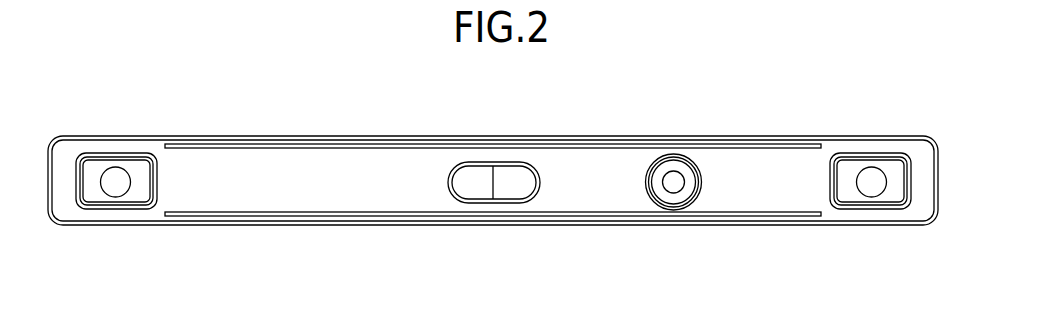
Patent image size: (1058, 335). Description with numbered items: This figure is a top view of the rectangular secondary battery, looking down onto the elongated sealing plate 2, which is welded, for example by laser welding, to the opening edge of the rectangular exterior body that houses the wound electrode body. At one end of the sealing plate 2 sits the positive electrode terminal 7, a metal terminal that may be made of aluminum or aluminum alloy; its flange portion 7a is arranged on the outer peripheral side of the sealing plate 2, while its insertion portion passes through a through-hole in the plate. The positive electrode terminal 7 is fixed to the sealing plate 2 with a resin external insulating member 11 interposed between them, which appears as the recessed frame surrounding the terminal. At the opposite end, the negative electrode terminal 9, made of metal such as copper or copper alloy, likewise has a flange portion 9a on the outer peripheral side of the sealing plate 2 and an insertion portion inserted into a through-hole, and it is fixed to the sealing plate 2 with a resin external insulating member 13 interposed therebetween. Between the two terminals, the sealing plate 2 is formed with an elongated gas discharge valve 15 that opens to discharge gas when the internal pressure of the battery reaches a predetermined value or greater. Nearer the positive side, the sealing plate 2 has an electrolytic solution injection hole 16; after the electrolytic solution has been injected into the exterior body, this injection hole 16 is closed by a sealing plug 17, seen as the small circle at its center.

The sealing plate 2 is at (593, 193).
The positive electrode terminal 7 is at (872, 196).
The flange portion 7a is at (895, 175).
The negative electrode terminal 9 is at (115, 196).
The flange portion 9a is at (96, 169).
The external insulating member 11 is at (873, 155).
The external insulating member 13 is at (126, 157).
The gas discharge valve 15 is at (477, 188).
The electrolytic solution injection hole 16 is at (674, 190).
The sealing plug 17 is at (674, 181).